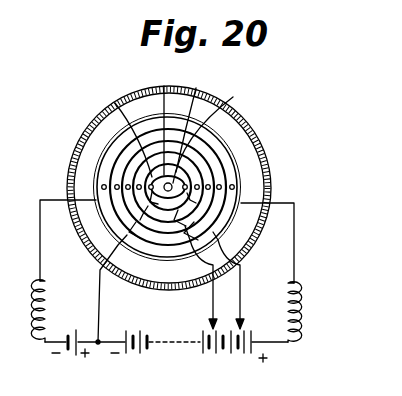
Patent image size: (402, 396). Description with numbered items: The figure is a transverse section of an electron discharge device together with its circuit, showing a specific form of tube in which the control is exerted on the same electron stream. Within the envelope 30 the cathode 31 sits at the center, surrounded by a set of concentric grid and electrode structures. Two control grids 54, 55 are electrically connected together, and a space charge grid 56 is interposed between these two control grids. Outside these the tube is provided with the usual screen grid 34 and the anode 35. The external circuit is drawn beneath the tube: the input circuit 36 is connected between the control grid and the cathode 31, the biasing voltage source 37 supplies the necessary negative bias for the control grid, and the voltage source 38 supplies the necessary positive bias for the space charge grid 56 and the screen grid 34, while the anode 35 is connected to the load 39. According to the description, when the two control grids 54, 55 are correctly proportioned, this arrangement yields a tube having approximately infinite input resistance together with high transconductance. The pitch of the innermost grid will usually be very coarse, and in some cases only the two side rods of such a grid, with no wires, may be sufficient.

The envelope 30 is at (78, 139).
The cathode 31 is at (215, 171).
The screen grid 34 is at (233, 97).
The anode 35 is at (226, 143).
The input circuit 36 is at (47, 293).
The biasing voltage source 37 is at (67, 357).
The voltage source 38 is at (182, 307).
The load 39 is at (301, 309).
The control grid 54 is at (115, 103).
The control grid 55 is at (199, 80).
The space charge grid 56 is at (164, 86).